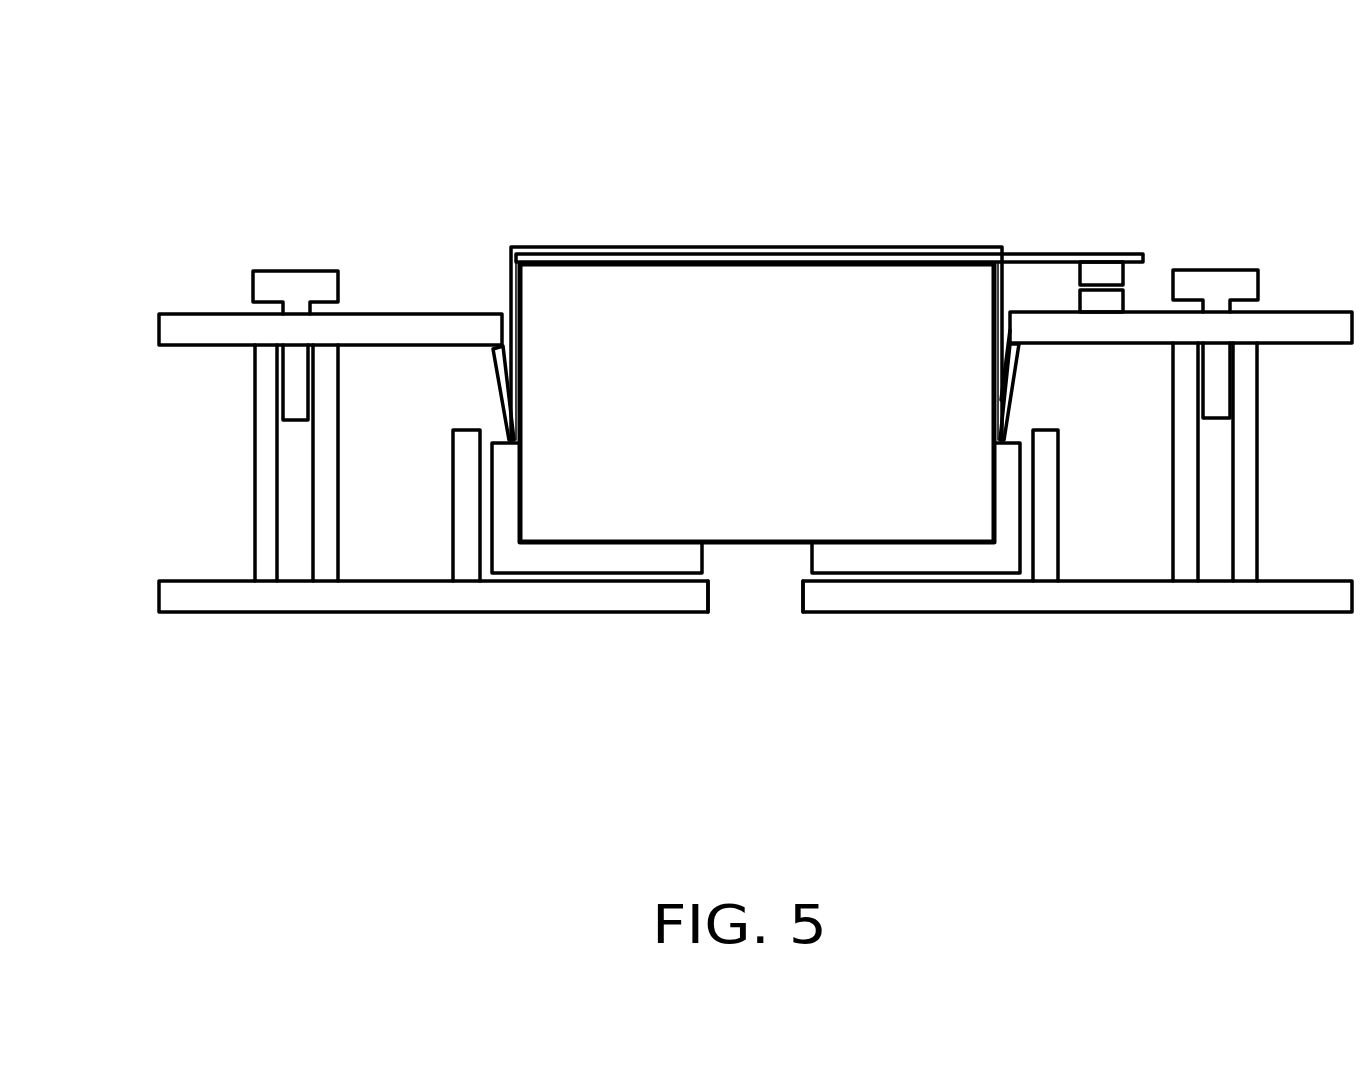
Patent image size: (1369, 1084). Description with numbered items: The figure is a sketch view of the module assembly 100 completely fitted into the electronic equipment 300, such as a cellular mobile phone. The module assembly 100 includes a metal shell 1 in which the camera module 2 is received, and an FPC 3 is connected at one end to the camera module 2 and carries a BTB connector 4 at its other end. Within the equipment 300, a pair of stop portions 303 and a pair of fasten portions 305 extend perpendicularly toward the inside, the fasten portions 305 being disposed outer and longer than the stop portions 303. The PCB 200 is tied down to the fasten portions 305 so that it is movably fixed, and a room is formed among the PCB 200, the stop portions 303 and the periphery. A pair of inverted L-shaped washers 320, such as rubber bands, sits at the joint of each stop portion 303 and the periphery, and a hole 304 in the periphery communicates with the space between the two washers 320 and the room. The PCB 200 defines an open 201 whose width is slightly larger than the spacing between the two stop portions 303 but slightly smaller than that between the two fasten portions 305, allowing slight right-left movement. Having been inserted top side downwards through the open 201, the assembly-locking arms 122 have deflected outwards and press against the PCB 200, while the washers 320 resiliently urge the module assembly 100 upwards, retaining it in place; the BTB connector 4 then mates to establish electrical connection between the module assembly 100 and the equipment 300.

The shell 1 is at (787, 247).
The camera module 2 is at (562, 297).
The FPC 3 is at (867, 258).
The BTB connector 4 is at (1103, 275).
The module assembly 100 is at (657, 247).
The assembly-locking arms 122 is at (500, 368).
The PCB 200 is at (1278, 327).
The open 201 is at (1018, 345).
The electronic equipment 300 is at (205, 597).
The stop portion 303 is at (470, 492).
The hole 304 is at (747, 595).
The fasten portion 305 is at (260, 373).
The washers 320 is at (583, 558).